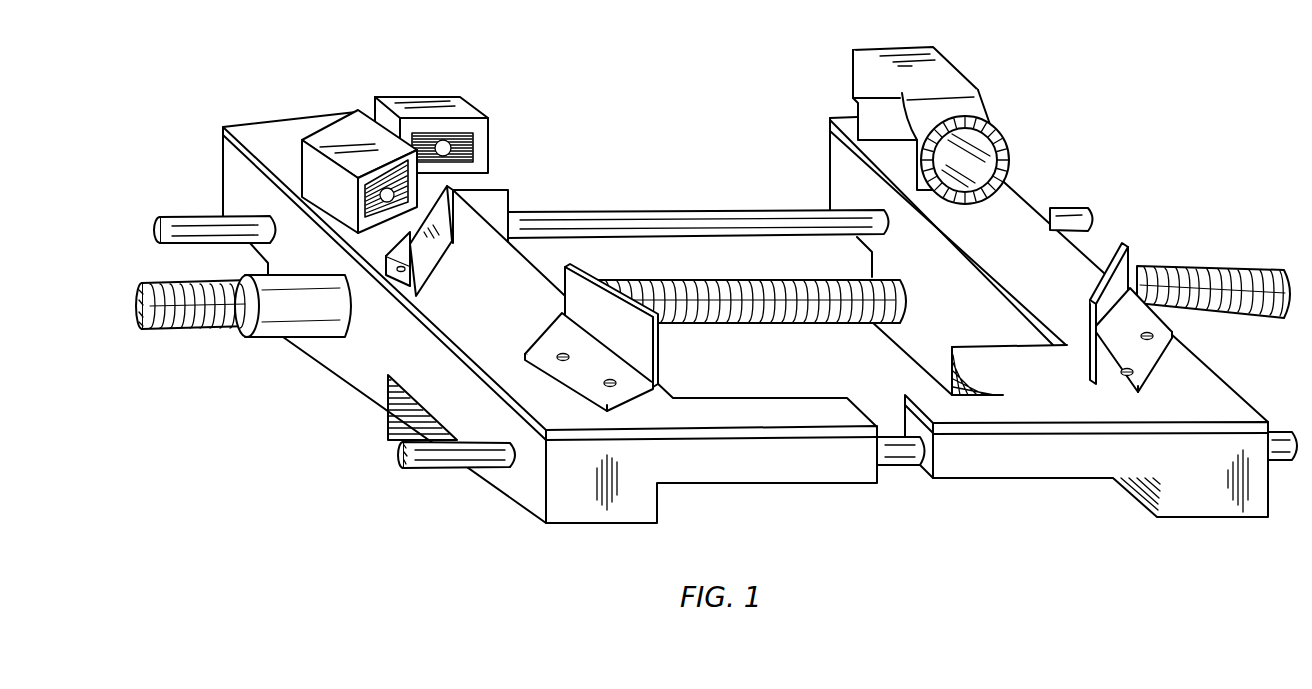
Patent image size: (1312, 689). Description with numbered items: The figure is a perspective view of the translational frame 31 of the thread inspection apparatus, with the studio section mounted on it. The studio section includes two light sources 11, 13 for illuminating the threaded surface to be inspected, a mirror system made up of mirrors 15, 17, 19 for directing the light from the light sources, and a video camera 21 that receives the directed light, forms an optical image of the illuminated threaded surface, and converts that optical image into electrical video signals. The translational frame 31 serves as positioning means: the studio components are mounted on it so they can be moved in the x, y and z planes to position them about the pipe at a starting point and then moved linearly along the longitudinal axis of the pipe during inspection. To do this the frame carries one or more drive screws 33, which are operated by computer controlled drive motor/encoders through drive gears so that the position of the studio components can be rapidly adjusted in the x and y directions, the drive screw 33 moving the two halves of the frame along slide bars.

The light source 11 is at (453, 107).
The light source 13 is at (356, 125).
The mirror 15 is at (432, 243).
The mirror 17 is at (638, 330).
The mirror 19 is at (1128, 245).
The video camera 21 is at (1007, 137).
The translational frame 31 is at (637, 502).
The drive screw 33 is at (760, 318).